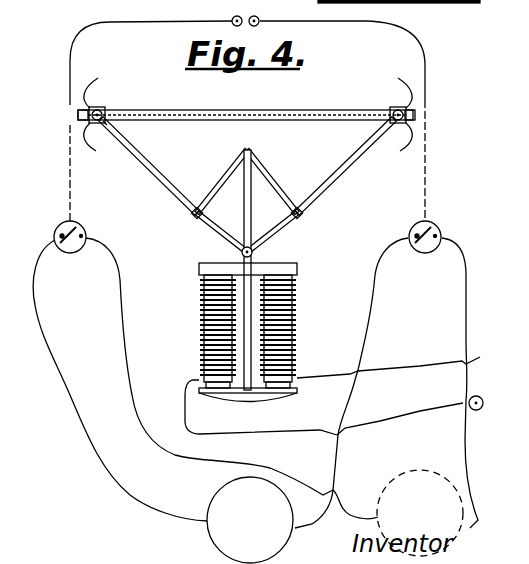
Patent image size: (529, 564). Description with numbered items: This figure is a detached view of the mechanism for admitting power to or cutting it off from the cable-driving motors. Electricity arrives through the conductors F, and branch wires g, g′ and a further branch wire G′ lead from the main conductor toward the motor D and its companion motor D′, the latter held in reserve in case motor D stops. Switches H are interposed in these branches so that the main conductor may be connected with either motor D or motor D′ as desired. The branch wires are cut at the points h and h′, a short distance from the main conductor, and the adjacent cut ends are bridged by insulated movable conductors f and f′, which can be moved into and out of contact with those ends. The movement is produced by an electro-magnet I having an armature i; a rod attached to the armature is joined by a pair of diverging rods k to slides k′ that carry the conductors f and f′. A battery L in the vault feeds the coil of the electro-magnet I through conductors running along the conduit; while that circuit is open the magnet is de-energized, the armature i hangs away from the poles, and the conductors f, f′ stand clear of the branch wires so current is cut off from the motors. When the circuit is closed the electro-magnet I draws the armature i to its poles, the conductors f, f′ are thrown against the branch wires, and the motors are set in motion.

The conductors F is at (245, 13).
The switch H is at (84, 229).
The cut point h is at (231, 116).
The cut point h′ is at (420, 116).
The movable conductor f is at (91, 114).
The movable conductor f′ is at (399, 114).
The slide k′ is at (104, 112).
The diverging rod k is at (247, 185).
The electro-magnet I is at (255, 325).
The armature i is at (248, 403).
The frame a is at (120, 380).
The branch wire g is at (209, 366).
The branch wire g′ is at (466, 318).
The branch wire G′ is at (338, 456).
The connecting rod I′ is at (400, 424).
The battery L is at (482, 404).
The motor D is at (250, 520).
The companion motor D′ is at (420, 513).